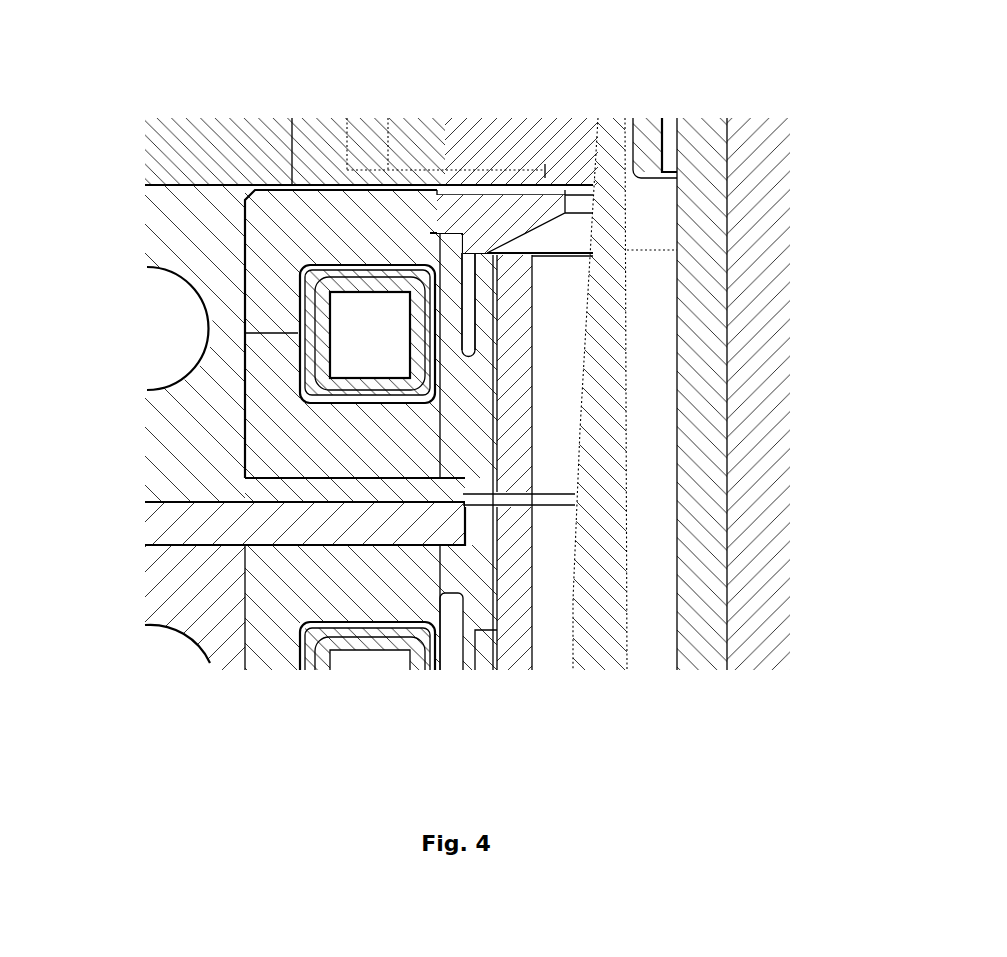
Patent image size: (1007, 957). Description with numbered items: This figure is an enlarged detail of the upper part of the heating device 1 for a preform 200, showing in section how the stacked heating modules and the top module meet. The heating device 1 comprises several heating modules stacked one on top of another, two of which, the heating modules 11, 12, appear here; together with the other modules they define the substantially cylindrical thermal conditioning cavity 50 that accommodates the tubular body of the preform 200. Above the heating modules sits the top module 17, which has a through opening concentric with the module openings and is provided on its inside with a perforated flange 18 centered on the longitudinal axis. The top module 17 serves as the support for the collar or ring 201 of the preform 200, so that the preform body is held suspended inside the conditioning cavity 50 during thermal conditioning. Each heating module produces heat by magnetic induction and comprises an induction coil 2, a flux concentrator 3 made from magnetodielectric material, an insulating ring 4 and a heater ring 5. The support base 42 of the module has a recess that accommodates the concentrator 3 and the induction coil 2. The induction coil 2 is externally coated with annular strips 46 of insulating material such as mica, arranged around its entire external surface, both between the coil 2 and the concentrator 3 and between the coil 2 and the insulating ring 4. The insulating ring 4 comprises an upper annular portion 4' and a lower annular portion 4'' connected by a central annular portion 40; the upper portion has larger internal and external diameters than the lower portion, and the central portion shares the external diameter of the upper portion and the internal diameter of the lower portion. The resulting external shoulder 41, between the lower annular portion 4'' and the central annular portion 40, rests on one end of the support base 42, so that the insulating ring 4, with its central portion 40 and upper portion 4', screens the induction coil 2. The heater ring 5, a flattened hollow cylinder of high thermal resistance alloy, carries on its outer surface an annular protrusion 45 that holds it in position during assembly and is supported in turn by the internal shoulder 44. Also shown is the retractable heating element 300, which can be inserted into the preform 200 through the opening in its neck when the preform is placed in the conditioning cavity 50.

The heating device 1 is at (210, 74).
The induction coil 2 is at (362, 305).
The flux concentrator 3 is at (316, 120).
The insulating ring 4 is at (515, 161).
The upper annular portion 4' is at (284, 336).
The lower annular portion 4'' is at (469, 669).
The heater ring 5 is at (515, 297).
The heating module 11 is at (148, 235).
The heating module 12 is at (148, 548).
The top module 17 is at (338, 215).
The perforated flange 18 is at (267, 160).
The central annular portion 40 is at (455, 428).
The shoulder 41 is at (443, 490).
The support base 42 is at (447, 475).
The internal shoulder 44 is at (475, 357).
The annular protrusion 45 is at (485, 343).
The annular strips 46 is at (407, 268).
The thermal conditioning cavity 50 is at (550, 598).
The preform 200 is at (602, 167).
The collar or ring 201 is at (575, 152).
The retractable heating element 300 is at (728, 247).